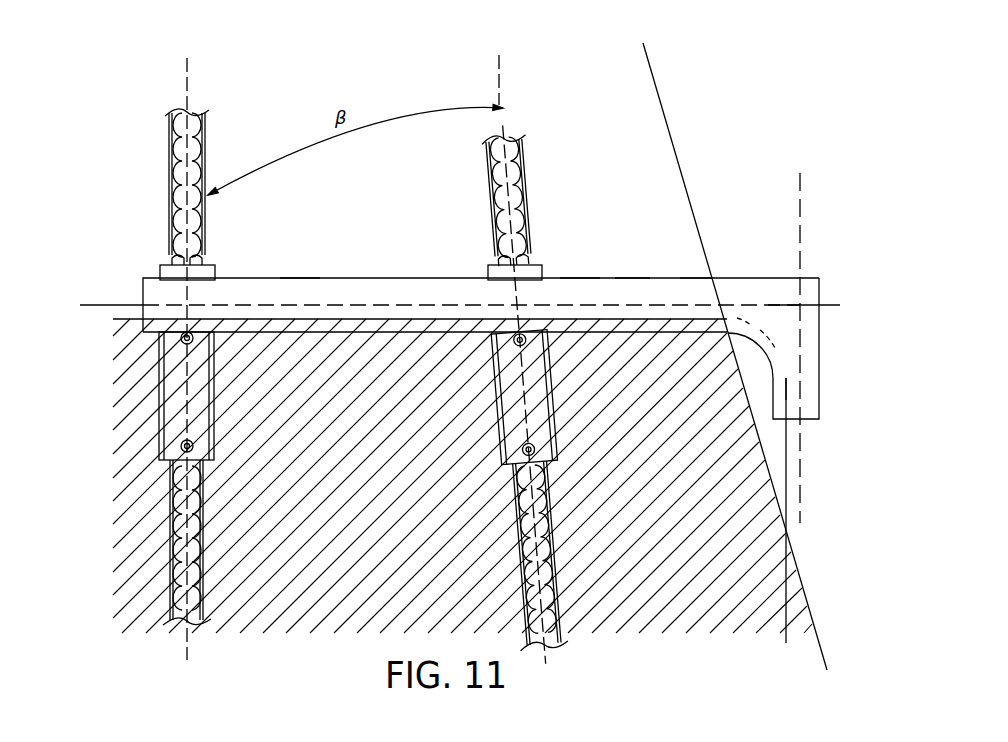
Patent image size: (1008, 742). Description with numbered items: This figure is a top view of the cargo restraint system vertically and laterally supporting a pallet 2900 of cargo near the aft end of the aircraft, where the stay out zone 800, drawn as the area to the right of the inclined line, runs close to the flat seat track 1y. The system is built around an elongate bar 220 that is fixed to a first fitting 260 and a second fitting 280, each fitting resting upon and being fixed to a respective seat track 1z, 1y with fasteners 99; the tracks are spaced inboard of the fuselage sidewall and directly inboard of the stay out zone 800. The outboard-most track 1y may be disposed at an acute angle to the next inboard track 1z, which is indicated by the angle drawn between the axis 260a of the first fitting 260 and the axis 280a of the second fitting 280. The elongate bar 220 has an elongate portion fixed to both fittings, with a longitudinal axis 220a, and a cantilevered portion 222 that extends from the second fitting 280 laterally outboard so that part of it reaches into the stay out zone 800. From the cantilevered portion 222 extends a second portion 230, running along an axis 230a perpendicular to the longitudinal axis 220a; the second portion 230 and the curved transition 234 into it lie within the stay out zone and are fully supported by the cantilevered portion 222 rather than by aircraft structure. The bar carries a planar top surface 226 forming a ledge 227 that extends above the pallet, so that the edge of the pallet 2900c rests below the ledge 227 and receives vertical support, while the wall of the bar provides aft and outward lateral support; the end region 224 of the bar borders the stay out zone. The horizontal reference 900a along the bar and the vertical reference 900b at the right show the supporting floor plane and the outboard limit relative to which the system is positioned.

The elongate bar 220 is at (376, 296).
The longitudinal axis 220a is at (104, 304).
The cantilevered portion 222 is at (632, 280).
The beam end portion 224 is at (690, 280).
The planar top surface 226 is at (574, 280).
The ledge 227 is at (298, 298).
The second portion 230 is at (767, 407).
The axis through the second portion 230a is at (800, 520).
The curved transition portion 234 is at (782, 360).
The first fitting 260 is at (170, 380).
The axis of first screw 260a is at (187, 72).
The second fitting 280 is at (476, 296).
The original axis of second screw 280a is at (500, 68).
The stay out zone 800 is at (689, 163).
The horizontal reference plane 900a is at (424, 302).
The vertical reference plane 900b is at (787, 622).
The pallet 2900 is at (742, 460).
The edge of pallet 2900c is at (782, 362).
The fasteners 99 is at (181, 446).
The flat seat track 1y is at (560, 567).
The seat track 1z is at (165, 554).